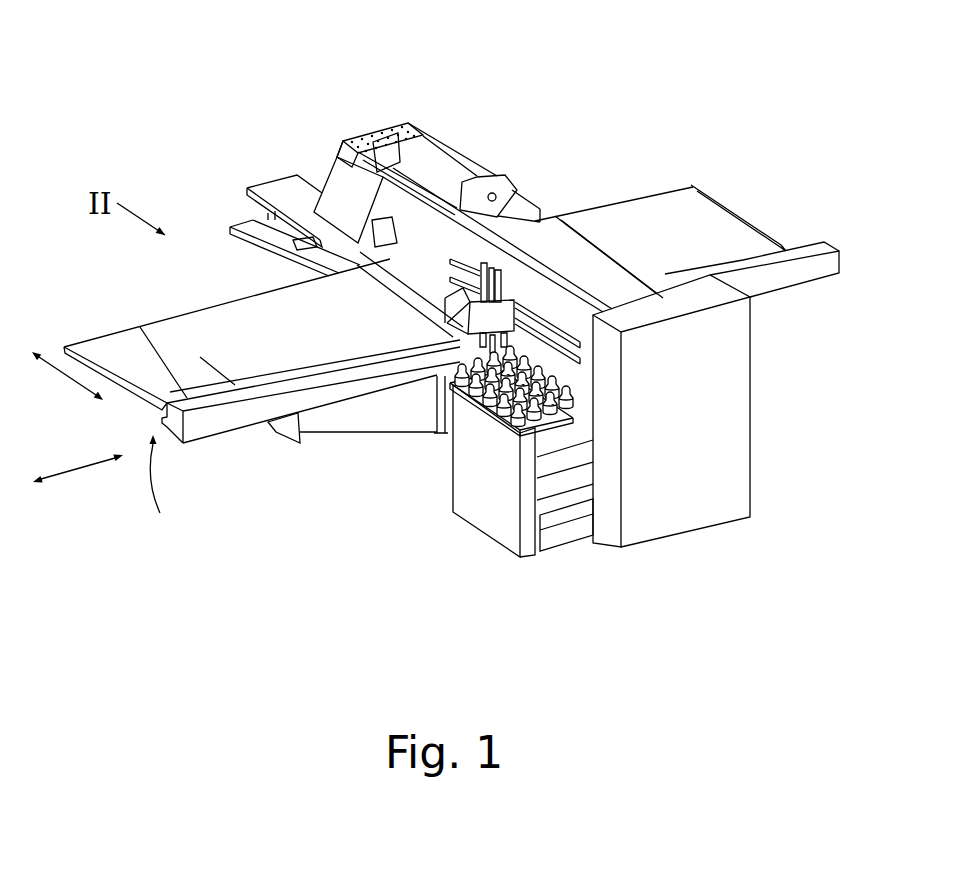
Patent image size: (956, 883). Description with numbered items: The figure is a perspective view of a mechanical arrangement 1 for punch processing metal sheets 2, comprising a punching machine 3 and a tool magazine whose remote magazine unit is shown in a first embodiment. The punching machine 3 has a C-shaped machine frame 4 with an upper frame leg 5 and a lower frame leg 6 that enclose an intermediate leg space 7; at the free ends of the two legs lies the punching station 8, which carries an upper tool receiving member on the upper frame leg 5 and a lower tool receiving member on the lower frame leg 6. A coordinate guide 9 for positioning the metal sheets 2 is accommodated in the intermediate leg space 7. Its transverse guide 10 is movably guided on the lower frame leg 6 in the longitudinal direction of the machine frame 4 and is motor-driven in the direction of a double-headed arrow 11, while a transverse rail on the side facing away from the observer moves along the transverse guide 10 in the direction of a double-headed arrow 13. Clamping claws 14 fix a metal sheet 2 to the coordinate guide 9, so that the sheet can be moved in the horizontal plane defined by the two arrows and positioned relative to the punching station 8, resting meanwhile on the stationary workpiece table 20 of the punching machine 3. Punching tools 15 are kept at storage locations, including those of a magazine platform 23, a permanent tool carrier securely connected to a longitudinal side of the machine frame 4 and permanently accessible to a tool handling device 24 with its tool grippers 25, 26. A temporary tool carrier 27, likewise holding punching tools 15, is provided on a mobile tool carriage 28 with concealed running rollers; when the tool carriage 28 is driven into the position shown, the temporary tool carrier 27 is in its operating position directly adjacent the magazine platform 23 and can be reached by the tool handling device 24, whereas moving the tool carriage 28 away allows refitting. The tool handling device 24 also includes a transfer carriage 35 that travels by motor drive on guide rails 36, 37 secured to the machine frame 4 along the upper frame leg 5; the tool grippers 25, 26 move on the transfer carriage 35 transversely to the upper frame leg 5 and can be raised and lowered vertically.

The mechanical arrangement 1 is at (278, 531).
The metal sheet 2 is at (205, 322).
The punching machine 3 is at (567, 133).
The machine frame 4 is at (382, 106).
The upper frame leg 5 is at (474, 160).
The lower frame leg 6 is at (435, 436).
The intermediate leg space 7 is at (300, 263).
The punching station 8 is at (294, 194).
The coordinate guide 9 is at (157, 489).
The transverse guide 10 is at (218, 424).
The double-headed arrow 11 is at (67, 380).
The double-headed arrow 13 is at (73, 468).
The clamping claws 14 is at (745, 262).
The punching tools 15 is at (572, 412).
The workpiece table 20 is at (763, 250).
The magazine platform 23 is at (572, 425).
The tool handling device 24 is at (528, 282).
The tool gripper 25 is at (486, 264).
The tool gripper 26 is at (499, 270).
The temporary tool carrier 27 is at (476, 428).
The tool carriage 28 is at (497, 519).
The transfer carriage 35 is at (578, 297).
The guide rail 36 is at (580, 345).
The guide rail 37 is at (580, 361).